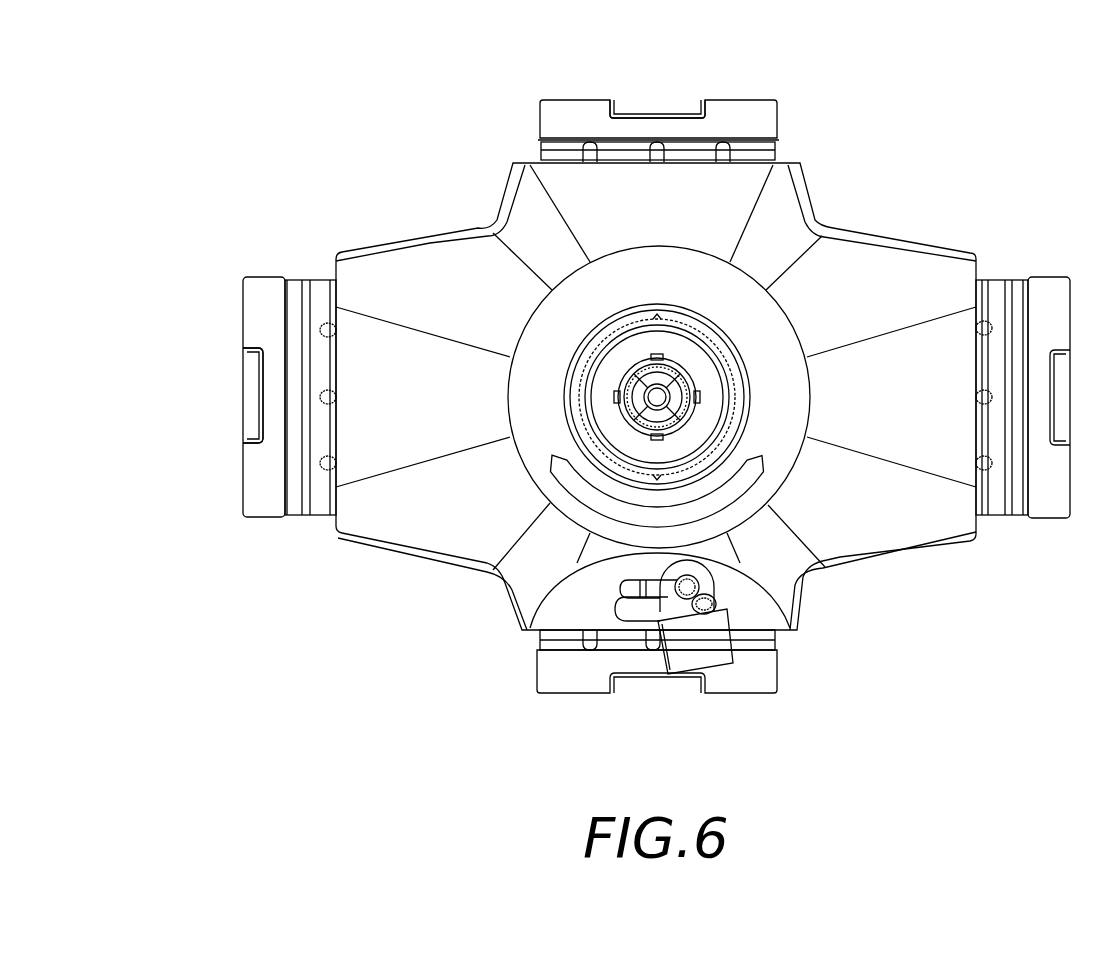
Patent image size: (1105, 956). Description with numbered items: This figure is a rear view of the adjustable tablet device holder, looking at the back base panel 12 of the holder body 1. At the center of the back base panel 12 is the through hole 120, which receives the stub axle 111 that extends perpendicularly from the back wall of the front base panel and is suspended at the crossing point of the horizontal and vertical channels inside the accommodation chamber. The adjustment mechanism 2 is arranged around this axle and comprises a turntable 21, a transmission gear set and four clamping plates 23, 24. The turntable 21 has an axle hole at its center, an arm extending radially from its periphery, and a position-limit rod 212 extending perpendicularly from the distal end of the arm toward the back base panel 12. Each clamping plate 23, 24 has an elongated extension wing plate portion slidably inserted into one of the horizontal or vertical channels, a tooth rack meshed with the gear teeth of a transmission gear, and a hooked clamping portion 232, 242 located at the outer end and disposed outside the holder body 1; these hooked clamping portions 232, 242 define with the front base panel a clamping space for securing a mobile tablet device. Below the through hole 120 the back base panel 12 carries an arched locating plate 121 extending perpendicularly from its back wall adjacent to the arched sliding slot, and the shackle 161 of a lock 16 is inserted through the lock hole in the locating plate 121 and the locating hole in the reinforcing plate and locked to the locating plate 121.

The holder body 1 is at (337, 556).
The back base panel 12 is at (390, 543).
The stub axle 111 is at (620, 395).
The through hole 120 is at (579, 435).
The adjustment mechanism 2 is at (488, 707).
The turntable 21 is at (637, 465).
The clamping plate 24 is at (758, 147).
The hooked clamping portion 242 is at (730, 112).
The clamping plate 23 is at (318, 290).
The hooked clamping portion 232 is at (263, 292).
The lock 16 is at (717, 657).
The shackle 161 is at (703, 598).
The arched locating plate 121 is at (630, 610).
The position-limit rod 212 is at (683, 590).